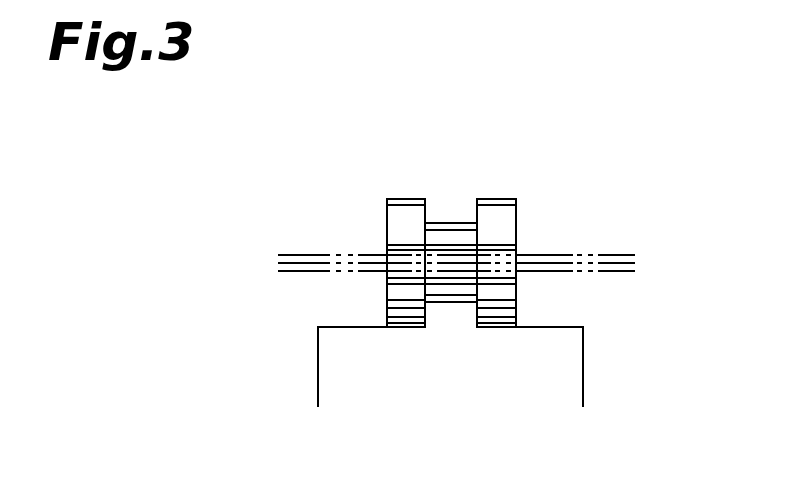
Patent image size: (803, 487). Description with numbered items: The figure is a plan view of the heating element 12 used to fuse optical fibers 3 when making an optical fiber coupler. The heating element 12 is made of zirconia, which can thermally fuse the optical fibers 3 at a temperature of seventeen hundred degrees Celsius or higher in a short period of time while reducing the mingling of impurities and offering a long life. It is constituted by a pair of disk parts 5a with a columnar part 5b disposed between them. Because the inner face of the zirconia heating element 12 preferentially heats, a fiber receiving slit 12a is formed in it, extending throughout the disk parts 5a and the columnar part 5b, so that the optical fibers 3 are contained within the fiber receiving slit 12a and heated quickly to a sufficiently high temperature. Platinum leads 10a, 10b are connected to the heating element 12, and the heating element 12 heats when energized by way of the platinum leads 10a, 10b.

The optical fibers 3 is at (610, 257).
The disk parts 5a is at (408, 330).
The columnar part 5b is at (447, 223).
The platinum lead 10a is at (318, 369).
The platinum lead 10b is at (583, 368).
The heating element 12 is at (520, 197).
The fiber receiving slit 12a is at (505, 250).